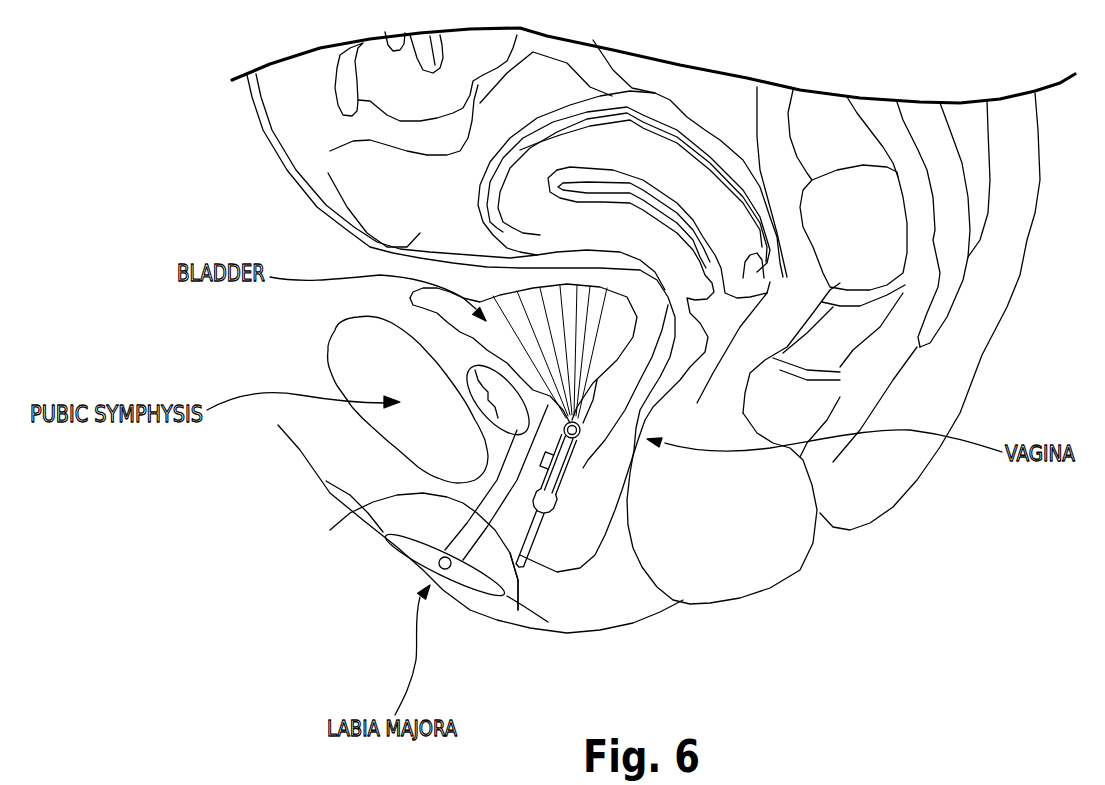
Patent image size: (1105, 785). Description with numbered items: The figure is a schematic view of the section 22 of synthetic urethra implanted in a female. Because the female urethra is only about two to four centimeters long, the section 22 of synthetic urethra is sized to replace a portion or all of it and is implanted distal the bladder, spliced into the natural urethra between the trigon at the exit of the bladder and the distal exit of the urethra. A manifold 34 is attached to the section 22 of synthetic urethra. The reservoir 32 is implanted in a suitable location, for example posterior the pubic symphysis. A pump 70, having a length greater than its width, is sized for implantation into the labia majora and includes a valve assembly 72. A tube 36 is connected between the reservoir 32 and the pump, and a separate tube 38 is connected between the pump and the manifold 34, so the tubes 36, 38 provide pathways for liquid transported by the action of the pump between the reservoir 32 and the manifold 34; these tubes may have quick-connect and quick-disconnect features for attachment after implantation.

The section of synthetic urethra 22 is at (553, 500).
The reservoir 32 is at (498, 400).
The manifold 34 is at (550, 468).
The tube 36 is at (330, 530).
The tube 38 is at (518, 610).
The pump 70 is at (415, 550).
The valve assembly 72 is at (463, 563).